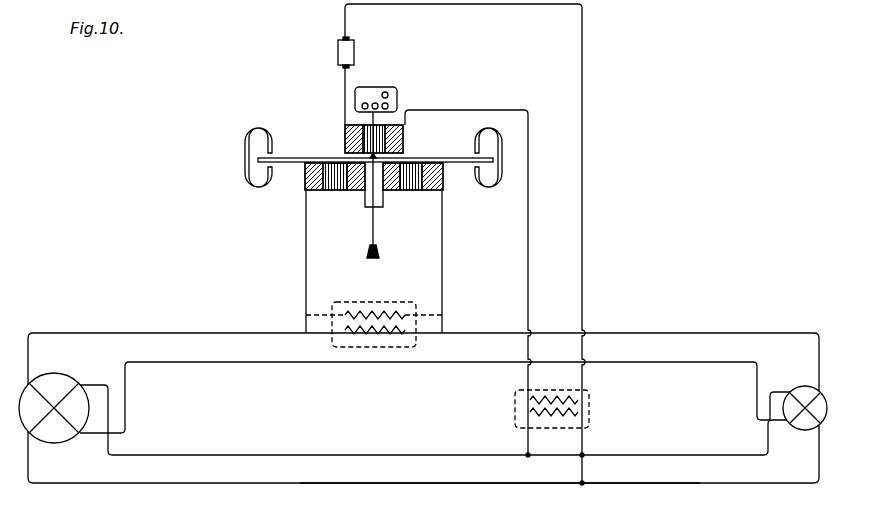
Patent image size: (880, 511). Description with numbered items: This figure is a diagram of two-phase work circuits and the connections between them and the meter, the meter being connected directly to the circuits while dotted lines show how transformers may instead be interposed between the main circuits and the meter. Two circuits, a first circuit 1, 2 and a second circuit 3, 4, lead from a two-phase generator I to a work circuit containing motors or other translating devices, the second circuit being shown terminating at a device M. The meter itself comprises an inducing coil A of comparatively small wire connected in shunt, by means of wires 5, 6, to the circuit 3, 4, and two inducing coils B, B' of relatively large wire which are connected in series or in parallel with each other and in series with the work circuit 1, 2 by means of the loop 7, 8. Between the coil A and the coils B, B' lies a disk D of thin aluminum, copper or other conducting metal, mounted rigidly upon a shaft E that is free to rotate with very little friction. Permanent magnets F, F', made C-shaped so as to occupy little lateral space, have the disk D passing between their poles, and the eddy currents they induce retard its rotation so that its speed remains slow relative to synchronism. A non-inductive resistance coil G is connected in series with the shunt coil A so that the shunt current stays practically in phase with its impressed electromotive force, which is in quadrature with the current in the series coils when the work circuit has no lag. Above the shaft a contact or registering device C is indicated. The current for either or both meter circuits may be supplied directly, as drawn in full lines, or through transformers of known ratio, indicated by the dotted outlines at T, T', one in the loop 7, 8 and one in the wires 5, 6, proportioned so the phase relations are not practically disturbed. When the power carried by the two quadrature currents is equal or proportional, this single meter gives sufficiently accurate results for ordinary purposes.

The work circuit wire 1 is at (191, 325).
The work circuit wire 2 is at (245, 362).
The circuit wire 3 is at (392, 448).
The circuit wire 4 is at (478, 483).
The shunt wire 5 is at (473, 283).
The shunt wire 6 is at (470, 244).
The loop wire 7 is at (296, 261).
The loop wire 8 is at (450, 261).
The inducing coil A is at (403, 140).
The inducing coil B is at (332, 185).
The inducing coil B' is at (424, 176).
The contact device C is at (374, 80).
The disk D is at (326, 158).
The shaft E is at (374, 222).
The permanent magnet F is at (254, 149).
The permanent magnet F' is at (497, 157).
The non-inductive resistance coil G is at (354, 52).
The two-phase generator I is at (80, 368).
The lamp M is at (800, 430).
The transformer T is at (374, 316).
The transformer T' is at (552, 398).